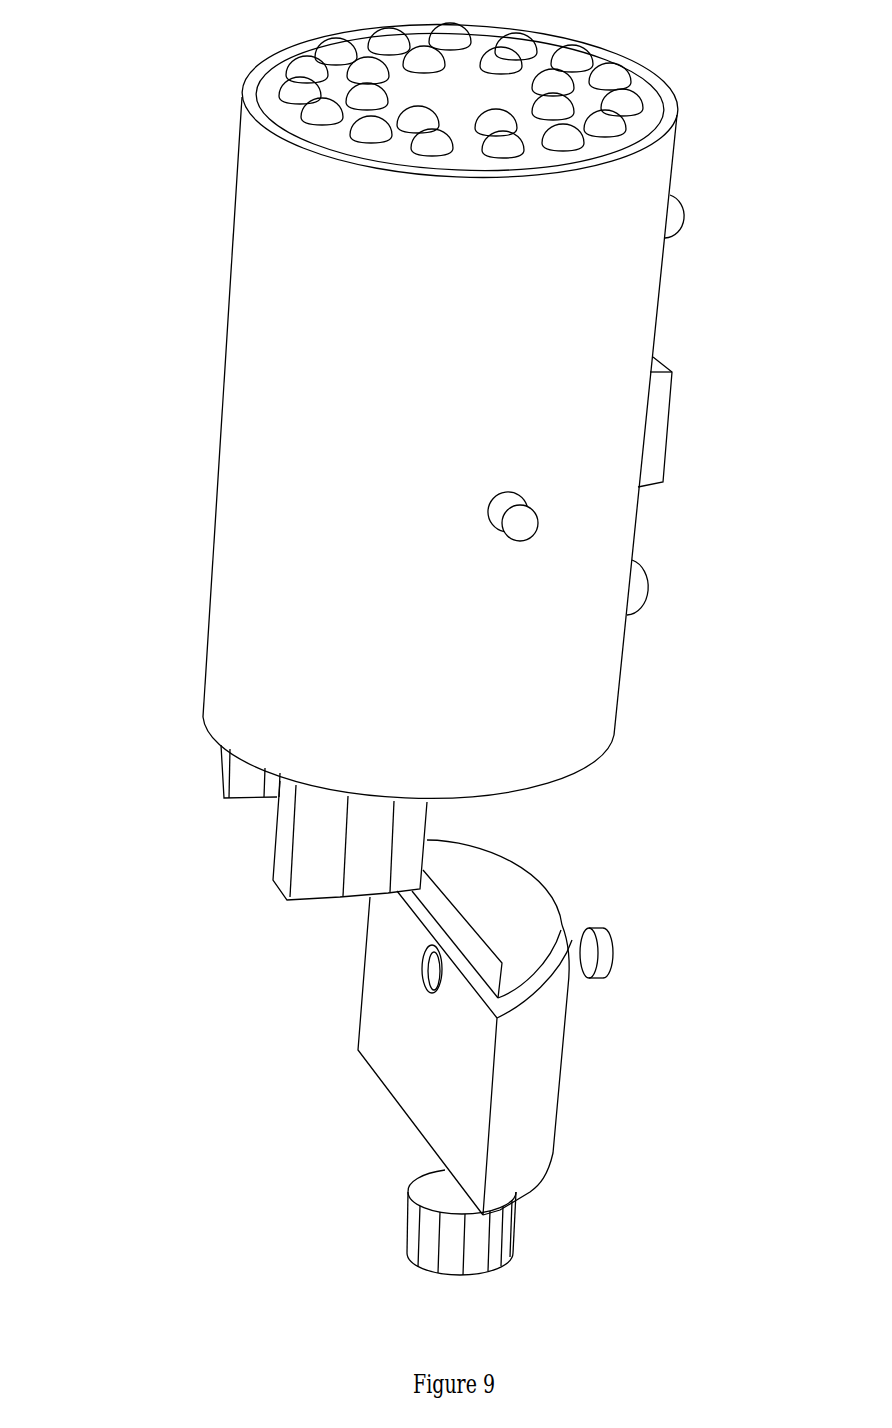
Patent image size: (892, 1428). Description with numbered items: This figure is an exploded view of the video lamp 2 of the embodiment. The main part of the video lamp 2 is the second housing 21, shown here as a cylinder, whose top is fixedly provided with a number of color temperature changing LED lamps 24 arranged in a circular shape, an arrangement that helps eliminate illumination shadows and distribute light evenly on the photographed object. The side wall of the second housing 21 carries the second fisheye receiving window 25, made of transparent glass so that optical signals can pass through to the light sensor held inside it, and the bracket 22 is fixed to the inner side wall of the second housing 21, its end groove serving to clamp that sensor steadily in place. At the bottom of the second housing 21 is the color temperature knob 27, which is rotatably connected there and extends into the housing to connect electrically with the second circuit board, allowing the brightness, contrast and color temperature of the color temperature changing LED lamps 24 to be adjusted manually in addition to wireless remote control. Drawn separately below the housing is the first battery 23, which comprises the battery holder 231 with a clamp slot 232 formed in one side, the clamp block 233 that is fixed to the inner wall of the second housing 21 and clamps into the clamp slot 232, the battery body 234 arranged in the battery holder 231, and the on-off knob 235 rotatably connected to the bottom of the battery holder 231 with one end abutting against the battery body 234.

The video lamp 2 is at (258, 533).
The second housing 21 is at (258, 387).
The bracket 22 is at (653, 423).
The color temperature changing LED lamp 24 is at (367, 72).
The second fisheye receiving window 25 is at (520, 525).
The color temperature knob 27 is at (313, 835).
The first battery 23 is at (522, 1105).
The battery holder 231 is at (425, 1090).
The clamp slot 232 is at (425, 973).
The clamp block 233 is at (597, 955).
The battery body 234 is at (503, 902).
The on-off knob 235 is at (428, 1232).